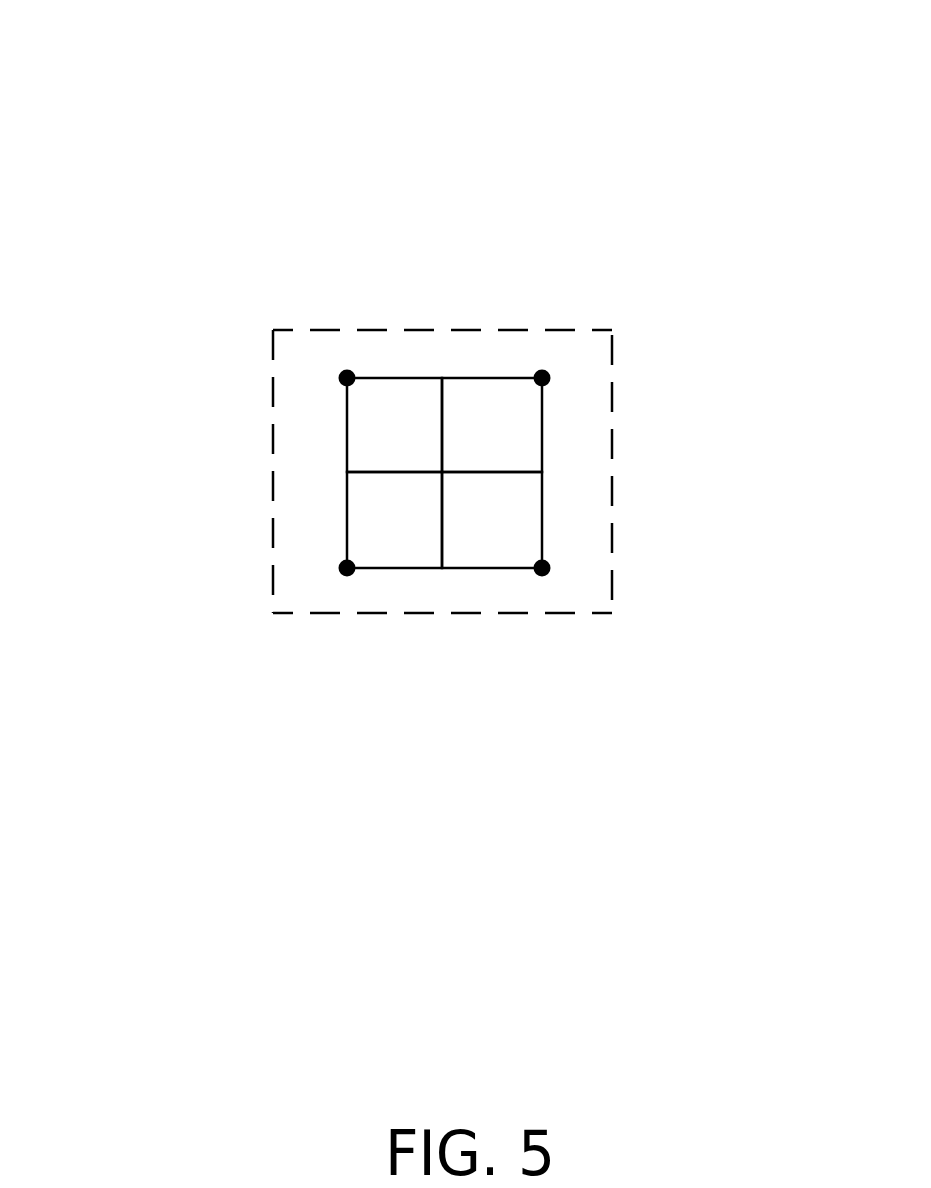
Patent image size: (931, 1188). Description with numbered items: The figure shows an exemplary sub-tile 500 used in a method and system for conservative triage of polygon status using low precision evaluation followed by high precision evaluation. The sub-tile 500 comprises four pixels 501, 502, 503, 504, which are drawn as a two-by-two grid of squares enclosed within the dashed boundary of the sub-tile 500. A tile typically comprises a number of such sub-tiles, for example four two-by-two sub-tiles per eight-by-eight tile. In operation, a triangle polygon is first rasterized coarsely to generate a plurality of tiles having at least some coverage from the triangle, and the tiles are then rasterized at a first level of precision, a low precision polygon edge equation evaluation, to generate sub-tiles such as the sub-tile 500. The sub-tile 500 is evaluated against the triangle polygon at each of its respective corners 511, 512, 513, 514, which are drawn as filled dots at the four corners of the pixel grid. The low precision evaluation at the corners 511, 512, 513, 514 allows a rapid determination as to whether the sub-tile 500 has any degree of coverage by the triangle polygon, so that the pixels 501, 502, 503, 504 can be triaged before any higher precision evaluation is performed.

The sub-tile 500 is at (252, 453).
The pixel 501 is at (393, 415).
The pixel 502 is at (512, 417).
The pixel 503 is at (512, 530).
The pixel 504 is at (375, 532).
The corner 511 is at (550, 376).
The corner 512 is at (543, 572).
The corner 513 is at (348, 575).
The corner 514 is at (338, 378).